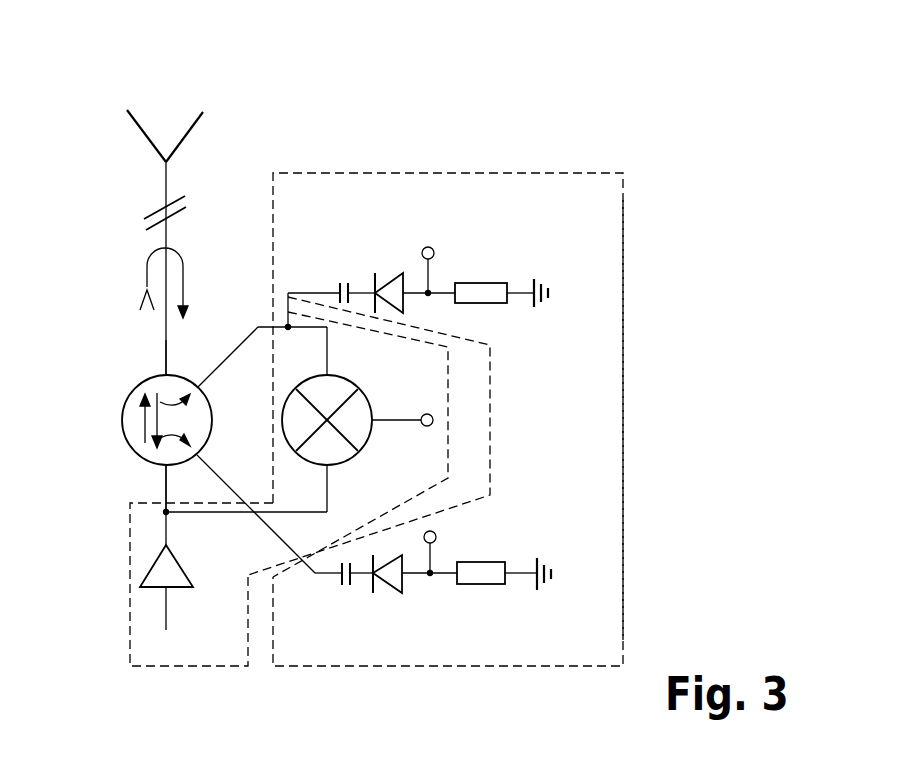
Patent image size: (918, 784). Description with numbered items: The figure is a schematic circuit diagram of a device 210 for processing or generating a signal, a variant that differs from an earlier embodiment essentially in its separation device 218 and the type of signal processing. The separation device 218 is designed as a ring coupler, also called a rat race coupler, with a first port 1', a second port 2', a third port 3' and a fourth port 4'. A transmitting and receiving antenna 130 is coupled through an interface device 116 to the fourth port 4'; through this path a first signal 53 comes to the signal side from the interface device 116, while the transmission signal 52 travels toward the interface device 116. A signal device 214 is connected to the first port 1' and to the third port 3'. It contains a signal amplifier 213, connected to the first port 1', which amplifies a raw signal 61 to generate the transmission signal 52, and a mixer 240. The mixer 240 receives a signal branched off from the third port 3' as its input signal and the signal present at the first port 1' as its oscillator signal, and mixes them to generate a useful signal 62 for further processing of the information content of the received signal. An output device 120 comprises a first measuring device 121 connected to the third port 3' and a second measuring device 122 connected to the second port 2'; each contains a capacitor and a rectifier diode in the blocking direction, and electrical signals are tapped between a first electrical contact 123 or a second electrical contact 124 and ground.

The transmitting and receiving antenna 130 is at (166, 172).
The interface device 116 is at (146, 218).
The transmission signal 52 is at (147, 272).
The first signal 53 is at (183, 262).
The separation device 218 is at (128, 395).
The fourth port 4' is at (132, 348).
The third port 3' is at (227, 336).
The second port 2' is at (256, 498).
The first port 1' is at (132, 488).
The device 210 is at (422, 140).
The output device 120 is at (623, 352).
The signal device 214 is at (130, 655).
The signal amplifier 213 is at (147, 570).
The raw signal 61 is at (166, 608).
The mixer 240 is at (362, 447).
The useful signal 62 is at (403, 420).
The first measuring device 121 is at (520, 293).
The first electrical contact 123 is at (434, 252).
The second measuring device 122 is at (520, 575).
The second electrical contact 124 is at (436, 537).